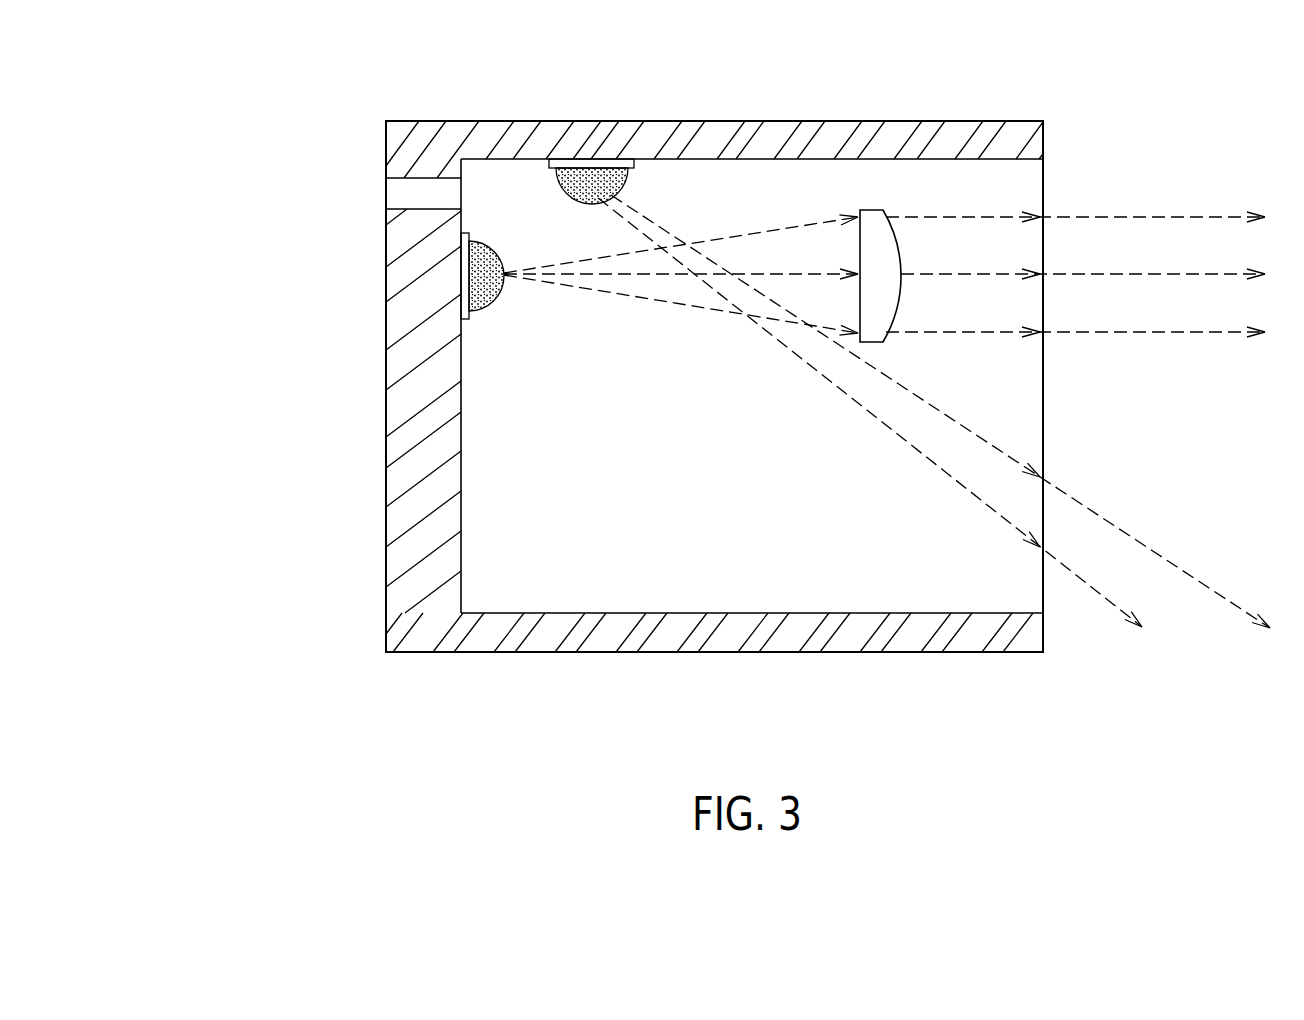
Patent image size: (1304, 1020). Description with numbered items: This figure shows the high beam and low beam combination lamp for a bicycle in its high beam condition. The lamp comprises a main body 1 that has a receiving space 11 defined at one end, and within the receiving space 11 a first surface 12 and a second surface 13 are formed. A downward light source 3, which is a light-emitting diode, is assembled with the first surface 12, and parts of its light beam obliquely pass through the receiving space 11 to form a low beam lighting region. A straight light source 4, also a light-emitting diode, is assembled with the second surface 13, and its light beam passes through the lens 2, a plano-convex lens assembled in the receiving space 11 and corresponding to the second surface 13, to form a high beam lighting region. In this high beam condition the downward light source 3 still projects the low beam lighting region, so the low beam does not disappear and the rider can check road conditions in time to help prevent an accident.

The main body 1 is at (268, 429).
The receiving space 11 is at (546, 587).
The first surface 12 is at (993, 159).
The second surface 13 is at (462, 408).
The lens 2 is at (868, 222).
The downward light source 3 is at (588, 176).
The straight light source 4 is at (478, 269).